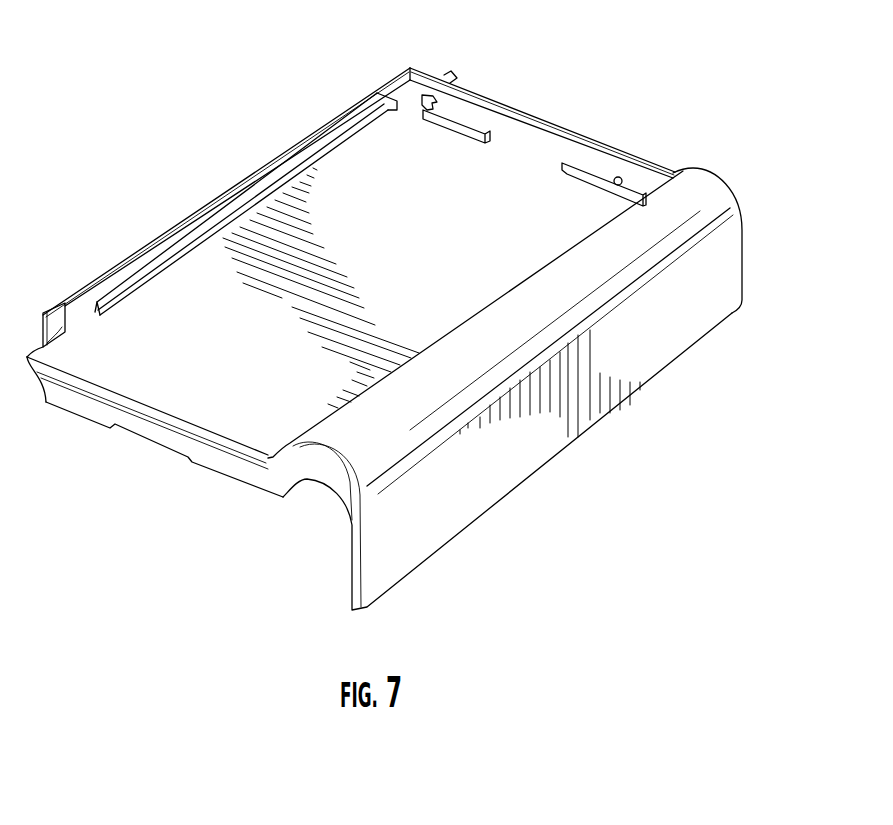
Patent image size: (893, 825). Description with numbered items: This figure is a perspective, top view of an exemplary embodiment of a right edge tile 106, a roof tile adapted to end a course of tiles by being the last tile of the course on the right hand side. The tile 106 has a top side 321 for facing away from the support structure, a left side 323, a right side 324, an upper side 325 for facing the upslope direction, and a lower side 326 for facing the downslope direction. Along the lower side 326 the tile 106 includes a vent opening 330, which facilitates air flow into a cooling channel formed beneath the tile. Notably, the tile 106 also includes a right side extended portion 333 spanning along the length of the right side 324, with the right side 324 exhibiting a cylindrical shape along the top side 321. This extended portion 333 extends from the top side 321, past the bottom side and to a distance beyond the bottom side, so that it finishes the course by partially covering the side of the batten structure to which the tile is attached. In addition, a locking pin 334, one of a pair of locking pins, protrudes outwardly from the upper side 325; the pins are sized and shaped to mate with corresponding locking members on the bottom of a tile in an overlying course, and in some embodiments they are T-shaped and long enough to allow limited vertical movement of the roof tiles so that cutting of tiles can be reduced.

The right edge tile 106 is at (397, 314).
The top side 321 is at (525, 157).
The left side 323 is at (200, 208).
The upper side 325 is at (620, 150).
The locking pin 334 is at (457, 80).
The right side 324 is at (640, 293).
The right side extended portion 333 is at (497, 475).
The lower side 326 is at (75, 403).
The vent opening 330 is at (150, 443).